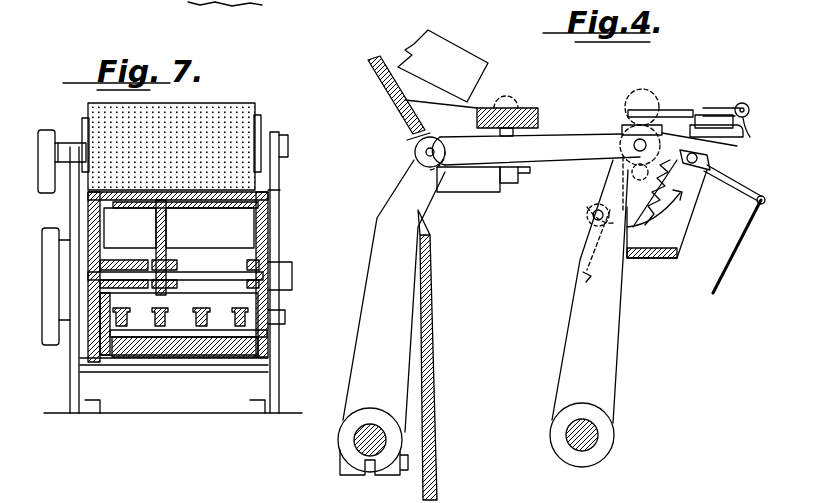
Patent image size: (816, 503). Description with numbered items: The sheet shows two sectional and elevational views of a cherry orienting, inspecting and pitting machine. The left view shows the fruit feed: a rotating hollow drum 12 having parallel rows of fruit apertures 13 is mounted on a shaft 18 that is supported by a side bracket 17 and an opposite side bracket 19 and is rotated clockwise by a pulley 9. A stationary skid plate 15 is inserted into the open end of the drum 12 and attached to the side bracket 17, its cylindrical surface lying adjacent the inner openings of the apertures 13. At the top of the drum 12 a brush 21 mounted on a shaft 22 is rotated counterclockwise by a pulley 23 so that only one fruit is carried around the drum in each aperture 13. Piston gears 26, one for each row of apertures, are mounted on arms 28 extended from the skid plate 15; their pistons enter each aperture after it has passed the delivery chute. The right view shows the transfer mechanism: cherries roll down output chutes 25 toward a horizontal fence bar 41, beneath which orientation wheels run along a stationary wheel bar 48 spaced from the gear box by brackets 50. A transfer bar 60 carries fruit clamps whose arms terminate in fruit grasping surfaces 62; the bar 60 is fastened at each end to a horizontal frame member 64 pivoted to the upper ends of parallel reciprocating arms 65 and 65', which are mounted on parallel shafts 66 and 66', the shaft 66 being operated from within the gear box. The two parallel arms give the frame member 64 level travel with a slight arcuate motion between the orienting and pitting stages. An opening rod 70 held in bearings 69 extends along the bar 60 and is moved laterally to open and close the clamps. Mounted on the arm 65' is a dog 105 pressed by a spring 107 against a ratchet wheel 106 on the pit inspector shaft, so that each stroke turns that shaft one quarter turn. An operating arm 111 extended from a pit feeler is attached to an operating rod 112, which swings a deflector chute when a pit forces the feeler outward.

In FIG. 7, the pulley 9 is at (42, 285).
In FIG. 7, the rotating hollow drum 12 is at (100, 302).
In FIG. 7, the fruit apertures 13 is at (236, 208).
In FIG. 7, the stationary skid plate 15 is at (148, 212).
In FIG. 7, the side bracket 17 is at (268, 237).
In FIG. 7, the shaft 18 is at (208, 275).
In FIG. 7, the opposite side bracket 19 is at (70, 378).
In FIG. 7, the brush 21 is at (236, 103).
In FIG. 7, the shaft 22 is at (288, 146).
In FIG. 7, the pulley 23 is at (40, 160).
In FIG. 4, the output chute 25 is at (457, 57).
In FIG. 7, the piston gear 26 is at (130, 340).
In FIG. 7, the arm 28 is at (240, 291).
In FIG. 4, the horizontal fence bar 41 is at (538, 110).
In FIG. 4, the stationary wheel bar 48 is at (507, 185).
In FIG. 4, the brackets 50 is at (450, 183).
In FIG. 4, the transfer bar 60 is at (713, 120).
In FIG. 4, the fruit grasping surfaces 62 is at (677, 107).
In FIG. 4, the horizontal frame member 64 is at (588, 153).
In FIG. 4, the reciprocating arm 65 is at (394, 296).
In FIG. 4, the reciprocating arm 65' is at (590, 291).
In FIG. 4, the shaft 66 is at (355, 441).
In FIG. 4, the shaft 66' is at (563, 435).
In FIG. 4, the bearings 69 is at (755, 136).
In FIG. 4, the opening rod 70 is at (742, 103).
In FIG. 4, the dog 105 is at (683, 210).
In FIG. 4, the ratchet wheel 106 is at (698, 160).
In FIG. 4, the spring 107 is at (627, 227).
In FIG. 4, the operating arm 111 is at (737, 183).
In FIG. 4, the operating rod 112 is at (737, 247).